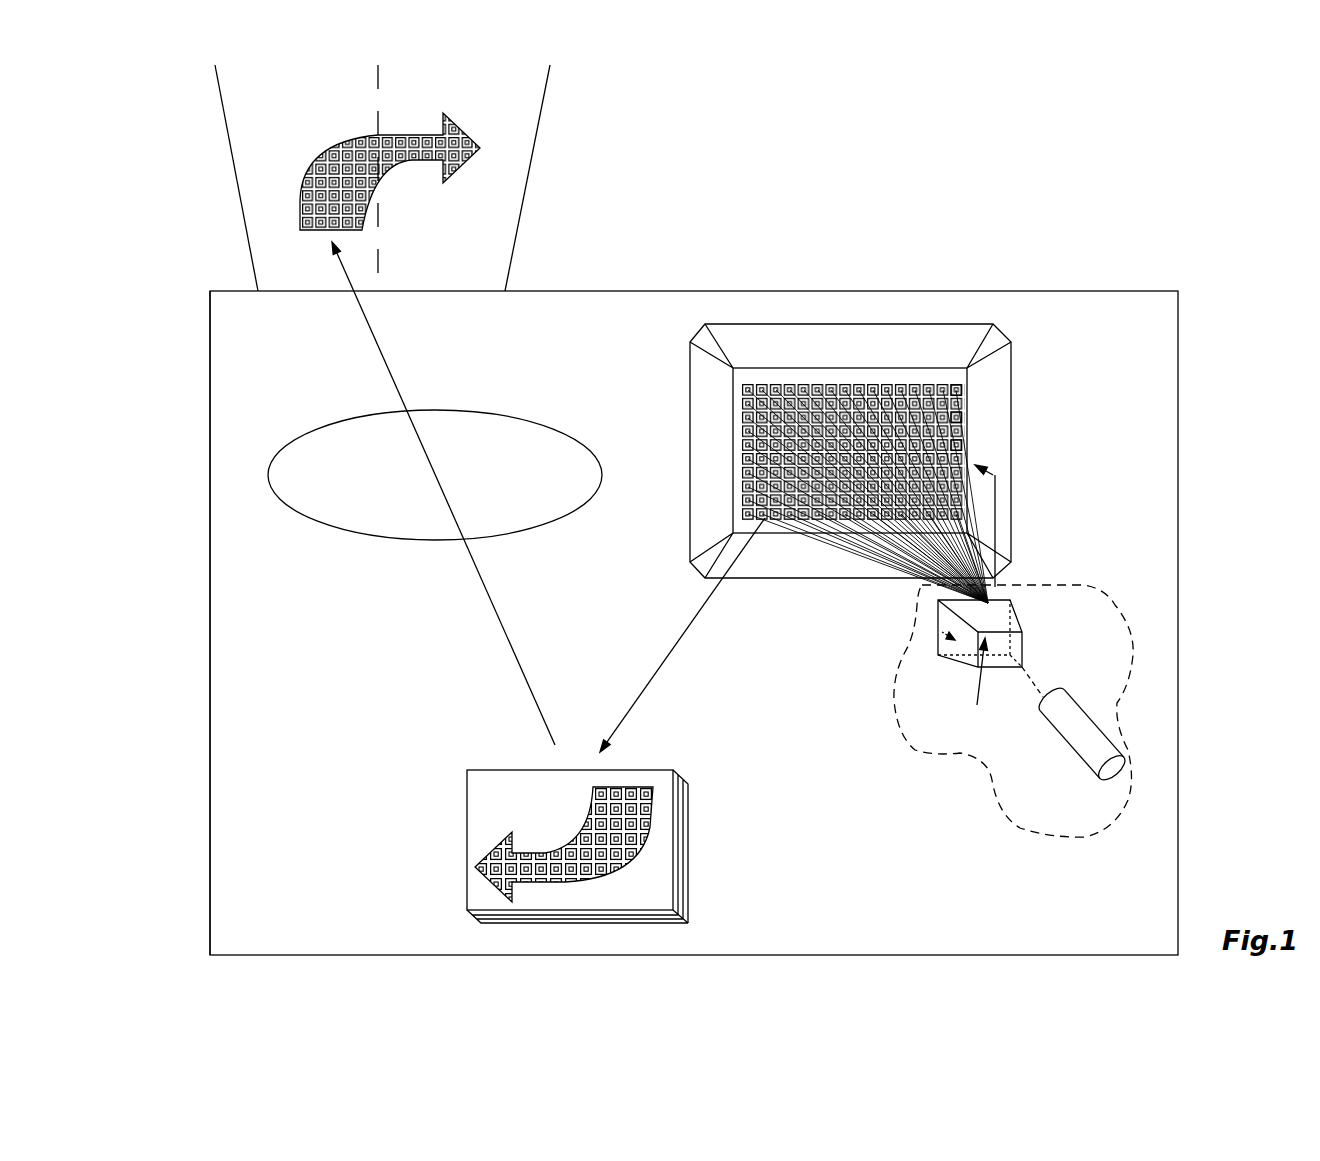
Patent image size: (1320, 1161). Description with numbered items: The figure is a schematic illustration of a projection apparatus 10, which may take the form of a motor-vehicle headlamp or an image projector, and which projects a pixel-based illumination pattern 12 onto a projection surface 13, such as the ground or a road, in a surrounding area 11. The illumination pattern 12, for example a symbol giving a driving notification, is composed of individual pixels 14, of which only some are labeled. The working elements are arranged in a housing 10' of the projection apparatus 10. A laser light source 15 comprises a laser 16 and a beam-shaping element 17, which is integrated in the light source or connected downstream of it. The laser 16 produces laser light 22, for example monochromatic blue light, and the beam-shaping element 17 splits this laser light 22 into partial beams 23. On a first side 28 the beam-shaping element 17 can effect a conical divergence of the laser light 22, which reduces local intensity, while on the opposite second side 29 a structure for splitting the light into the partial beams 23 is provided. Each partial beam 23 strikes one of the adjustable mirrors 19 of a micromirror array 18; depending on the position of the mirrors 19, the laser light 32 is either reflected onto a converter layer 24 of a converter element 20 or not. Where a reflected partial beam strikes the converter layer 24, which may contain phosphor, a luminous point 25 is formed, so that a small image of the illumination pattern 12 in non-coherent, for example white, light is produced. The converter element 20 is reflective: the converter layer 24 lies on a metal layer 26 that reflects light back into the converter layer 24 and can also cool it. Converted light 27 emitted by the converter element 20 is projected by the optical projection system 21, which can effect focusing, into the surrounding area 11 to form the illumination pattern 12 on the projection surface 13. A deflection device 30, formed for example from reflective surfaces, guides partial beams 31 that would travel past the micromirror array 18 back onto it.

The projection apparatus 10 is at (617, 526).
The housing 10' is at (146, 623).
The surrounding area 11 is at (275, 114).
The illumination pattern 12 is at (473, 157).
The projection surface 13 is at (513, 112).
The pixels 14 is at (305, 195).
The laser light source 15 is at (1003, 820).
The laser 16 is at (1063, 752).
The beam-shaping element 17 is at (958, 655).
The micromirror array 18 is at (771, 358).
The mirrors 19 is at (830, 385).
The converter element 20 is at (684, 745).
The optical projection system 21 is at (340, 532).
The laser light 22 is at (1037, 683).
The partial beams 23 is at (967, 393).
The converter layer 24 is at (677, 867).
The luminous point 25 is at (653, 793).
The metal layer 26 is at (690, 908).
The converted light 27 is at (503, 632).
The first side 28 is at (980, 686).
The second side 29 is at (942, 632).
The deflection device 30 is at (695, 340).
The partial beams 31 is at (995, 512).
The laser light 32 is at (688, 632).